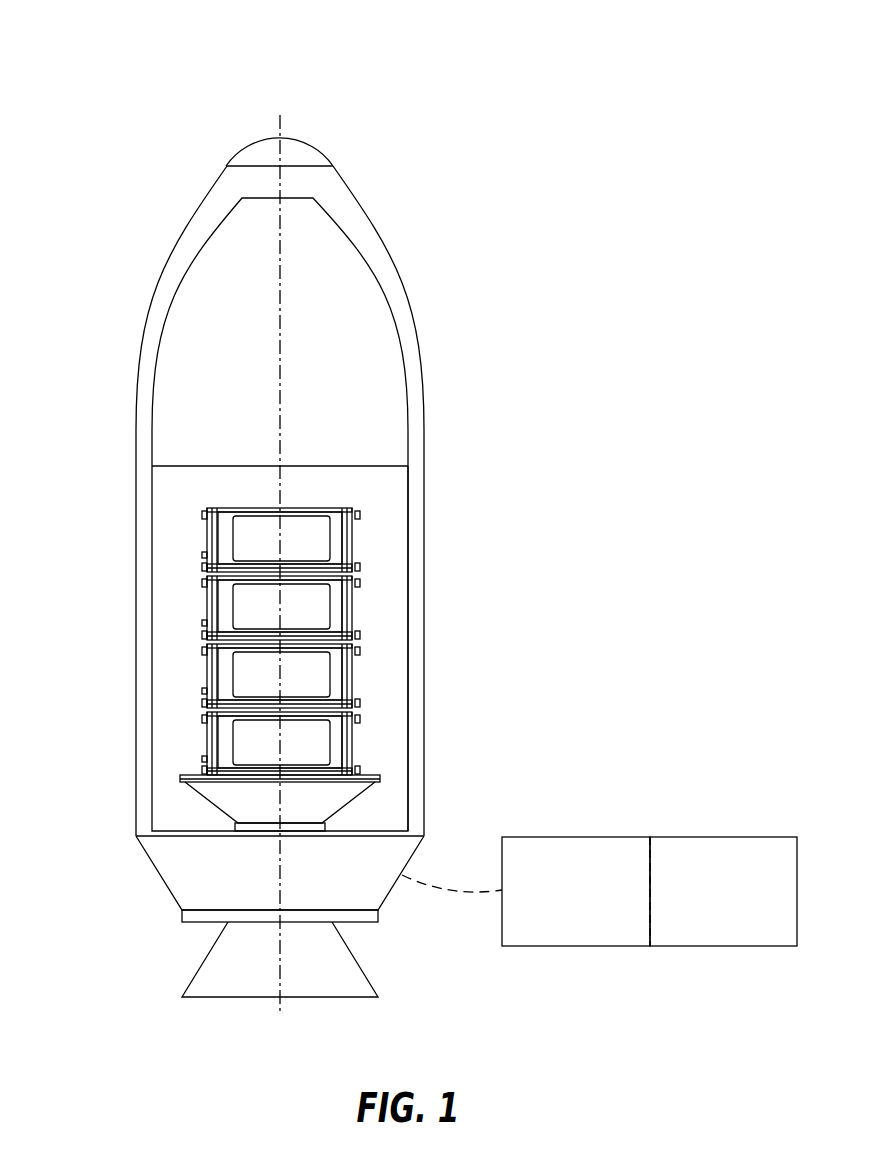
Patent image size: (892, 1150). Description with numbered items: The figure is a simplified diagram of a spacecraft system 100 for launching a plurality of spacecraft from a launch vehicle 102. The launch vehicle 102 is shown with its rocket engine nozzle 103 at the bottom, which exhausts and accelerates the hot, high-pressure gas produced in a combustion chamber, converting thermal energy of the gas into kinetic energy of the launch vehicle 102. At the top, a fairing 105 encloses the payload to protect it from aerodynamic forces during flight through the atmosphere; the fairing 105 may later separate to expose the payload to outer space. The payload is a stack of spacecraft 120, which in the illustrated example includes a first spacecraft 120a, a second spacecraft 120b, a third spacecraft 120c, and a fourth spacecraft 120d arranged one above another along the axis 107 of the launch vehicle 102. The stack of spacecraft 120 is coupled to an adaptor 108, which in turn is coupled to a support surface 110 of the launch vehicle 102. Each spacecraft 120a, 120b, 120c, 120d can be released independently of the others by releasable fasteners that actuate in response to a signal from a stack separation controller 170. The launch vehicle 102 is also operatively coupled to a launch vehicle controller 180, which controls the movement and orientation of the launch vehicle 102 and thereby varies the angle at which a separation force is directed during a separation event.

The spacecraft system 100 is at (438, 74).
The launch vehicle 102 is at (428, 630).
The rocket engine nozzle 103 is at (208, 968).
The fairing 105 is at (352, 224).
The axis 107 is at (280, 267).
The adaptor 108 is at (208, 793).
The support surface 110 is at (170, 835).
The stack of spacecraft 120 is at (350, 604).
The first spacecraft 120a is at (350, 538).
The second spacecraft 120b is at (350, 600).
The third spacecraft 120c is at (350, 670).
The fourth spacecraft 120d is at (350, 733).
The stack separation controller 170 is at (555, 838).
The launch vehicle controller 180 is at (742, 838).